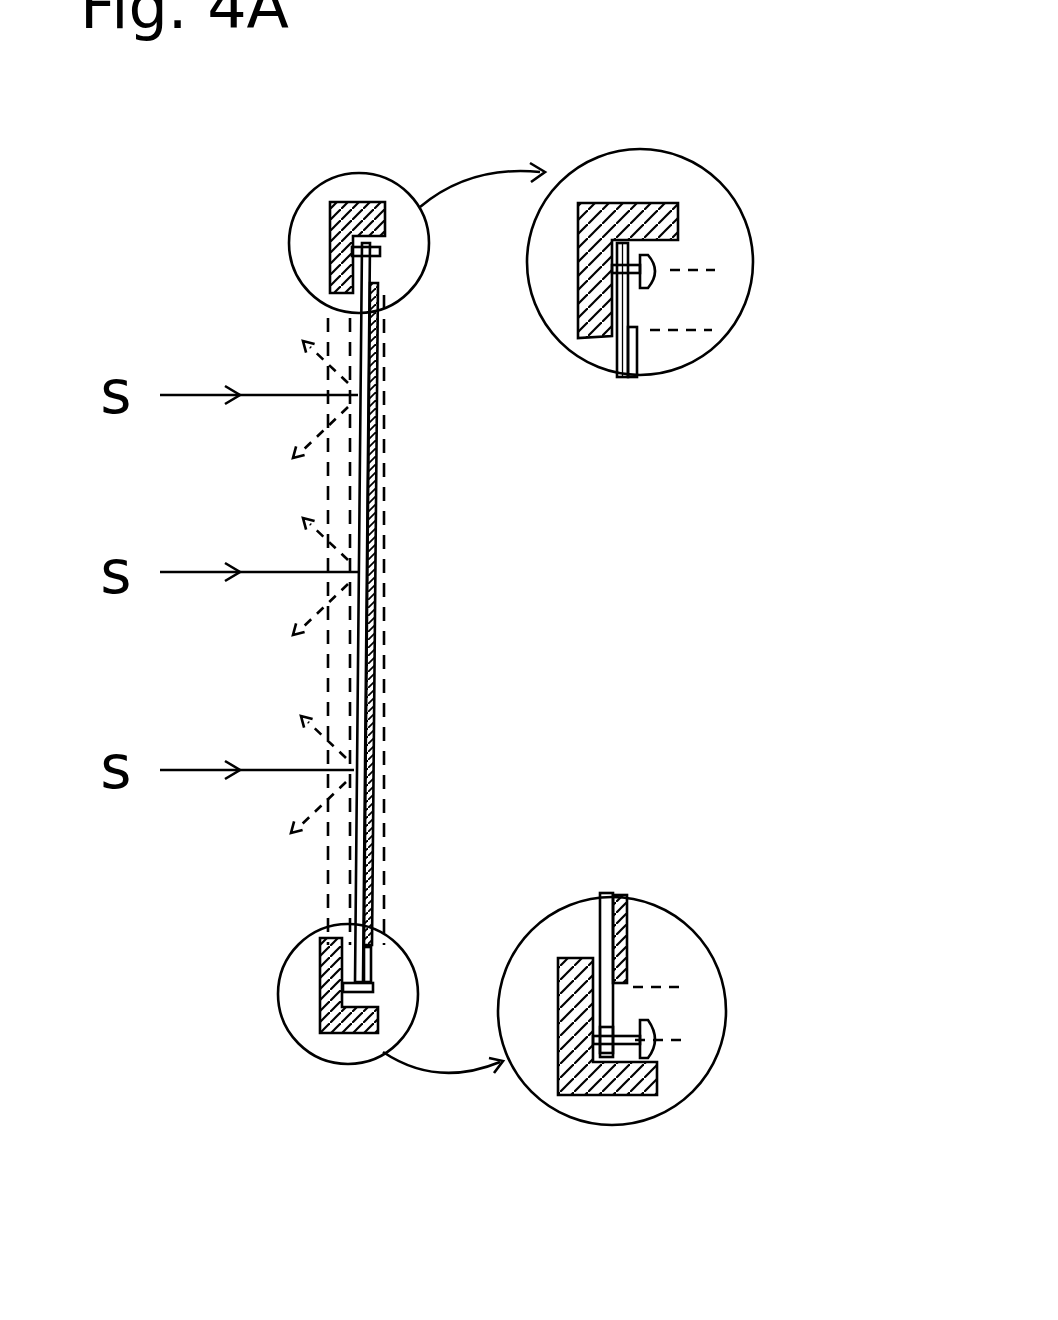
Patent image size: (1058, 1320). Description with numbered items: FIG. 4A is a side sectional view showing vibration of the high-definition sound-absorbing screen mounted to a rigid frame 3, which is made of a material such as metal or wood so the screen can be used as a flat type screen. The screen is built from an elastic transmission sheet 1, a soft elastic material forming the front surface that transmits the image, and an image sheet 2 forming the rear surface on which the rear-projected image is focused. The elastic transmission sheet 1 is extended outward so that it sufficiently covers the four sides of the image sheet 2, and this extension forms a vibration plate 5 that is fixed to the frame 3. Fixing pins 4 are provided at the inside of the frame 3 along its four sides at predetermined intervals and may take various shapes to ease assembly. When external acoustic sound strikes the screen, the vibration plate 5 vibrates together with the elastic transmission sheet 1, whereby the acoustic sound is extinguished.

The elastic transmission sheet 1 is at (360, 490).
The image sheet 2 is at (378, 395).
The frame 3 is at (330, 263).
The fixing pins 4 is at (365, 983).
The vibration plate 5 is at (633, 304).